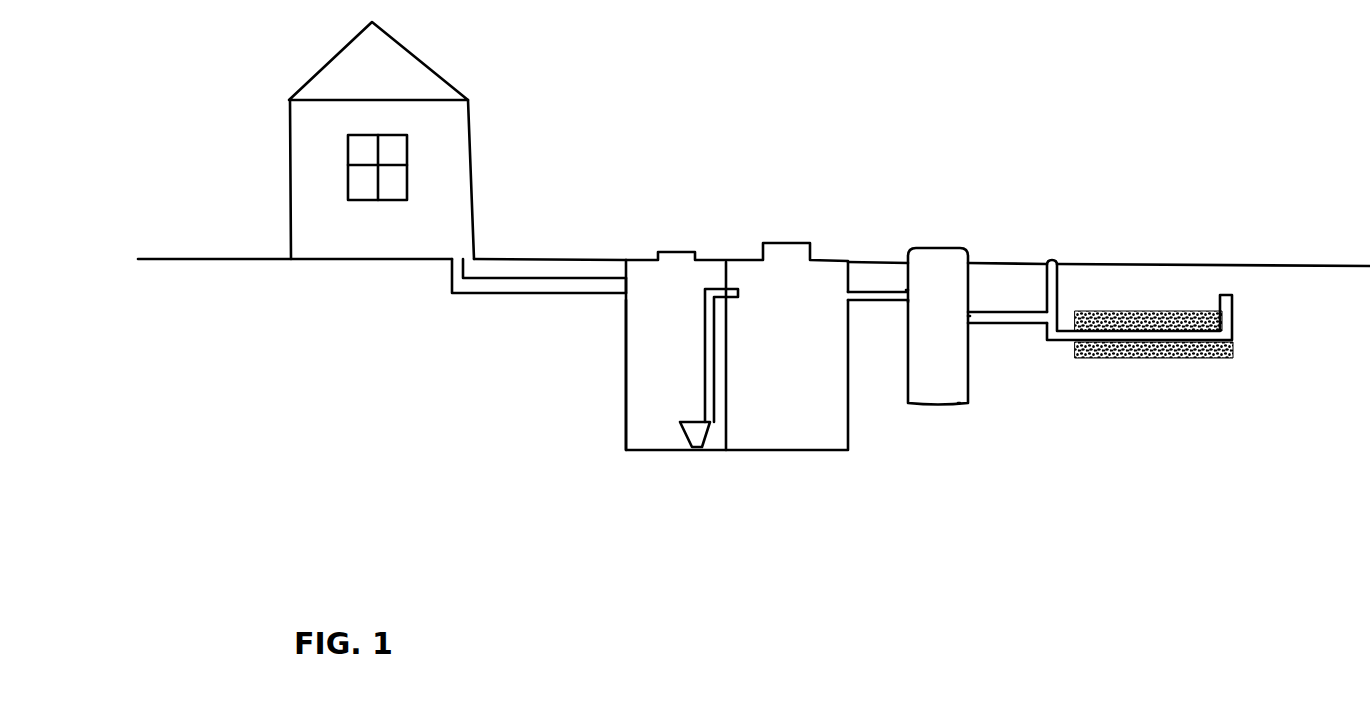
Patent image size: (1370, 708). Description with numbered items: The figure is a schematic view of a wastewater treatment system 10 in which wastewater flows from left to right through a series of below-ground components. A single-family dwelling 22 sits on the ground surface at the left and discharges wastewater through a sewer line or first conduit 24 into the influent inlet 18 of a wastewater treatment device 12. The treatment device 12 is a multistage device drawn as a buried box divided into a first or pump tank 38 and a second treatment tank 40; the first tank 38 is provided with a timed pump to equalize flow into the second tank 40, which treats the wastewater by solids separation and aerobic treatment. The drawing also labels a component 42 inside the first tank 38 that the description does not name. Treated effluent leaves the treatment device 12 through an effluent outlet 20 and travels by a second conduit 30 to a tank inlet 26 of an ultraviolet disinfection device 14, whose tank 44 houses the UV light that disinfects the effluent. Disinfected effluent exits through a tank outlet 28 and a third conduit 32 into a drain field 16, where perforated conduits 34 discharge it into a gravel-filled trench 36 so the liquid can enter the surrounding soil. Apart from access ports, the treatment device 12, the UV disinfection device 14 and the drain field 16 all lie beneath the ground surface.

The wastewater treatment system 10 is at (818, 123).
The wastewater treatment device 12 is at (658, 453).
The ultraviolet disinfection device 14 is at (942, 407).
The drain field 16 is at (1153, 362).
The influent inlet 18 is at (625, 297).
The effluent outlet 20 is at (852, 307).
The single-family dwelling 22 is at (473, 152).
The first conduit 24 is at (503, 302).
The tank inlet 26 is at (905, 288).
The tank outlet 28 is at (972, 308).
The second conduit 30 is at (887, 302).
The third conduit 32 is at (1010, 327).
The perforated conduits 34 is at (1165, 363).
The gravel-filled trench 36 is at (1217, 367).
The first tank 38 is at (628, 427).
The second treatment tank 40 is at (788, 457).
The effluent filter 42 is at (695, 450).
The tank 44 is at (960, 405).